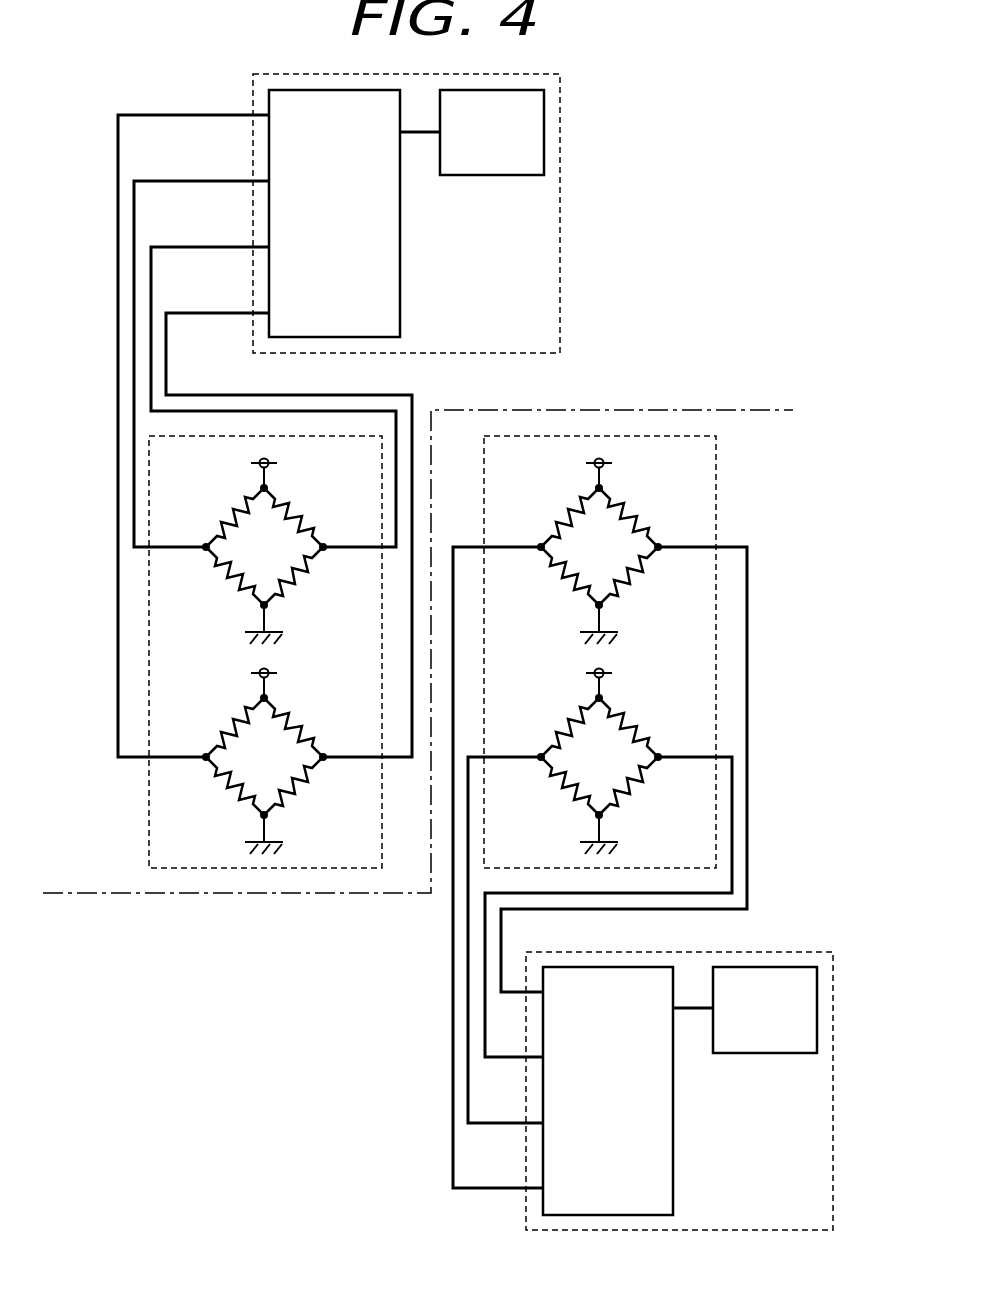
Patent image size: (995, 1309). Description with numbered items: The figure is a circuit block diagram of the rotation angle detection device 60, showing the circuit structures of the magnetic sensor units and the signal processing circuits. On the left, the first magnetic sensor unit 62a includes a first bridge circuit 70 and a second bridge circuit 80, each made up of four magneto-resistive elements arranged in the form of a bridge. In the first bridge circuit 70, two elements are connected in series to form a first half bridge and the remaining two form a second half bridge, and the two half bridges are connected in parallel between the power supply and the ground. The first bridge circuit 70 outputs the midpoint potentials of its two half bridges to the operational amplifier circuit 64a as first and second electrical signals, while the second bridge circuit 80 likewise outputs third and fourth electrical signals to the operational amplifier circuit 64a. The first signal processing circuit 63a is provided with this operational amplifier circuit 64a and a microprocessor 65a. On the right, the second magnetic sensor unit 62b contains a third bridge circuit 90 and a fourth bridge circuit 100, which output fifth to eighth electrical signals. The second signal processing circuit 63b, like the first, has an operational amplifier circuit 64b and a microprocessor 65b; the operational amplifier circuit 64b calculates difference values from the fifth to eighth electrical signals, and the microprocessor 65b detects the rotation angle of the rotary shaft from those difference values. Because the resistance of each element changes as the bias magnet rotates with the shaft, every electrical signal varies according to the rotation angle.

The rotation angle detection device 60 is at (812, 59).
The first magnetic sensor unit 62a is at (148, 842).
The second magnetic sensor unit 62b is at (716, 458).
The first signal processing circuit 63a is at (560, 184).
The second signal processing circuit 63b is at (708, 952).
The operational amplifier circuit 64a is at (400, 295).
The operational amplifier circuit 64b is at (673, 1171).
The microprocessor 65a is at (493, 176).
The microprocessor 65b is at (765, 1054).
The first bridge circuit 70 is at (328, 486).
The second bridge circuit 80 is at (329, 695).
The third bridge circuit 90 is at (665, 487).
The fourth bridge circuit 100 is at (663, 697).